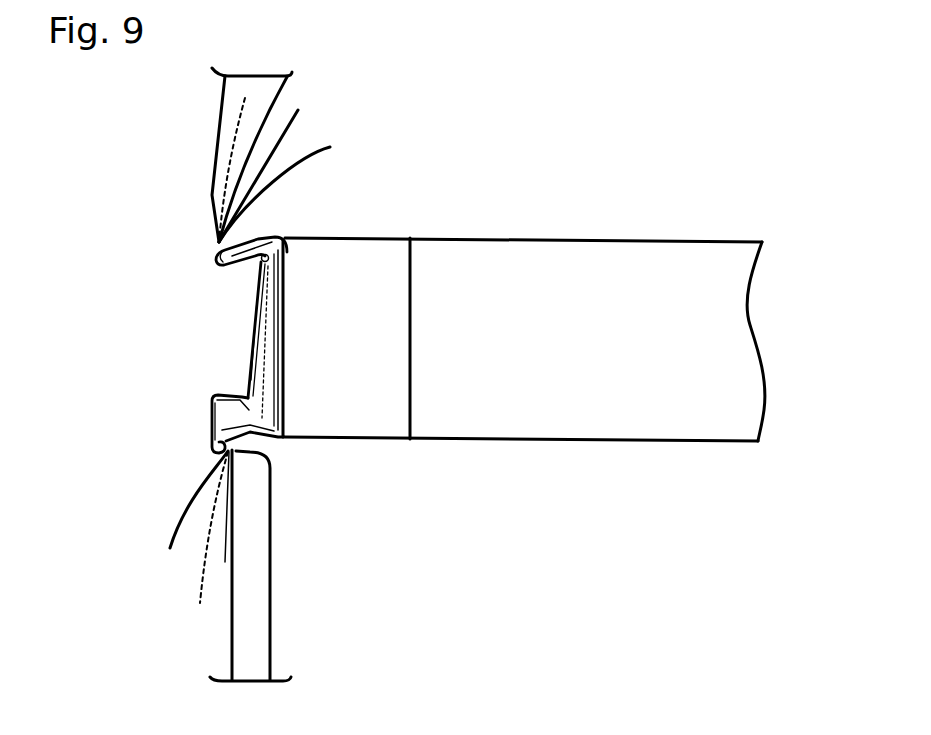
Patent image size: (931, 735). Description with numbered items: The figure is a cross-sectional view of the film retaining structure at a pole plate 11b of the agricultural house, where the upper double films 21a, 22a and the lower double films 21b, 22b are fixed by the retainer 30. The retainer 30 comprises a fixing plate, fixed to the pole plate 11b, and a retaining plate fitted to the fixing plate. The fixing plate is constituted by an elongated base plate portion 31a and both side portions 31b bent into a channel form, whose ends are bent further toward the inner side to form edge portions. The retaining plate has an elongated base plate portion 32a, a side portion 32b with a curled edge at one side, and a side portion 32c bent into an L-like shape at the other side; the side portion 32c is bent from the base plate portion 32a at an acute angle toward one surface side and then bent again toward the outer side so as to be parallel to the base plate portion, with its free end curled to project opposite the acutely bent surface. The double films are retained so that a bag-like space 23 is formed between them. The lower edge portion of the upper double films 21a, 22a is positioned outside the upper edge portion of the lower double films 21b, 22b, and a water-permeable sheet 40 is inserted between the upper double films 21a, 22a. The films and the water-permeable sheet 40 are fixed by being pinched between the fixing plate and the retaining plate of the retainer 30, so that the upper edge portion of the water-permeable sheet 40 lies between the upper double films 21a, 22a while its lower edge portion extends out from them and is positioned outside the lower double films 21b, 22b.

The pole plate 11b is at (380, 415).
The upper double film 21a is at (215, 122).
The lower double film 21b is at (290, 128).
The upper double film 22a is at (275, 95).
The lower double film 22b is at (315, 157).
The bag-like space 23 is at (228, 93).
The retainer 30 is at (287, 287).
The base plate portion 31a is at (290, 345).
The side portions 31b is at (258, 233).
The base plate portion 32a is at (255, 355).
The side portion with curled edge 32b is at (260, 272).
The side portion 32c is at (210, 423).
The water-permeable sheet 40 is at (225, 158).